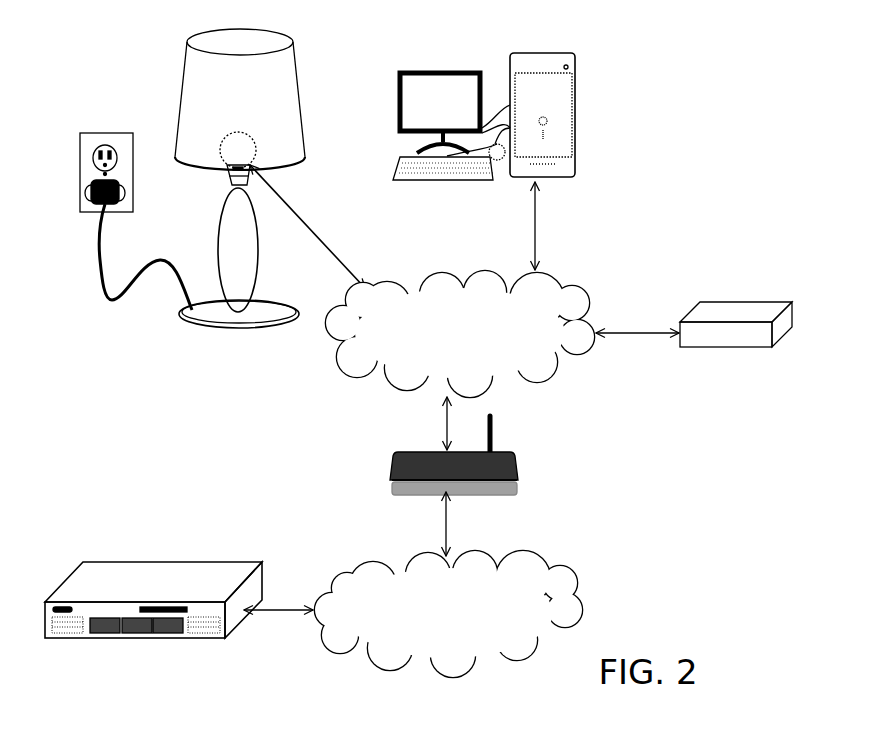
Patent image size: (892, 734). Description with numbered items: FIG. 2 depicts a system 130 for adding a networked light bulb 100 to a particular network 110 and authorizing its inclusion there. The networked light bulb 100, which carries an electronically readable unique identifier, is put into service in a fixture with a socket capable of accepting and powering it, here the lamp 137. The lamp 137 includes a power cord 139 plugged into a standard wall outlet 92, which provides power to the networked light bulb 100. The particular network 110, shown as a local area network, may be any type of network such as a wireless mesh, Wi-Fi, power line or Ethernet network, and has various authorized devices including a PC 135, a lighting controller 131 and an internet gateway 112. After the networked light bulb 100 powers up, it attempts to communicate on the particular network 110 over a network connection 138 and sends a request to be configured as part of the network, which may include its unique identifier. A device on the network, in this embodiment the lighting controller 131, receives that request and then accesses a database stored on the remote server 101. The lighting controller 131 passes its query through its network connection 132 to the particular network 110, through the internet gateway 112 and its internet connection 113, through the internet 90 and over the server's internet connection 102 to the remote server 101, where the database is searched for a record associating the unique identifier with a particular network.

The internet 90 is at (448, 614).
The standard wall outlet 92 is at (92, 147).
The networked light bulb 100 is at (262, 145).
The remote server 101 is at (153, 600).
The server's internet connection 102 is at (282, 607).
The particular network 110 is at (460, 334).
The internet gateway 112 is at (394, 473).
The internet connection 113 is at (445, 528).
The system 130 is at (736, 121).
The lighting controller 131 is at (742, 300).
The network connection 132 is at (635, 331).
The PC 135 is at (590, 73).
The lamp 137 is at (233, 277).
The network connection 138 is at (327, 243).
The power cord 139 is at (100, 280).